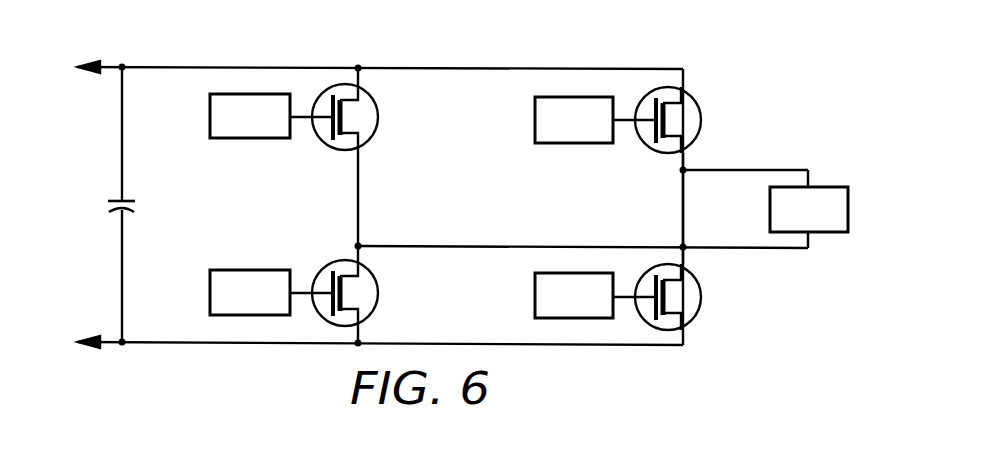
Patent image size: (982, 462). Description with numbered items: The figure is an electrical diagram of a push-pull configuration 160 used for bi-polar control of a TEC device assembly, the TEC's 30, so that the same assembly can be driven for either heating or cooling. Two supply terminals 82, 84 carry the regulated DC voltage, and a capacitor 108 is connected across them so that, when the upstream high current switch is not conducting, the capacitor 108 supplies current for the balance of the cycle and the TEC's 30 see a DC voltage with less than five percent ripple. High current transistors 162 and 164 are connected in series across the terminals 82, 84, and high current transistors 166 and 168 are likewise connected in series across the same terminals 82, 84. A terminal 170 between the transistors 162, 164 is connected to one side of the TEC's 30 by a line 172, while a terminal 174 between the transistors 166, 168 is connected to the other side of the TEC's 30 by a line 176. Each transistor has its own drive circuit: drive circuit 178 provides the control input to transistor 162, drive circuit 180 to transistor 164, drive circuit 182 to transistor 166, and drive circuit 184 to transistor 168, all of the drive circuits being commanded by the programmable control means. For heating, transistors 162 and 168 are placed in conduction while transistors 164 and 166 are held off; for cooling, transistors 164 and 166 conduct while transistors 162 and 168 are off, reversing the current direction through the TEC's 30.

The TEC device assembly 30 is at (848, 207).
The terminal 82 is at (120, 346).
The terminal 84 is at (122, 64).
The capacitor 108 is at (108, 204).
The push-pull configuration 160 is at (772, 62).
The high current transistor 162 is at (378, 117).
The high current transistor 164 is at (378, 293).
The high current transistor 166 is at (701, 120).
The high current transistor 168 is at (701, 297).
The terminal 170 is at (358, 246).
The line 172 is at (797, 250).
The terminal 174 is at (683, 170).
The line 176 is at (790, 168).
The drive circuit 178 is at (210, 116).
The drive circuit 180 is at (210, 293).
The drive circuit 182 is at (535, 120).
The drive circuit 184 is at (535, 296).